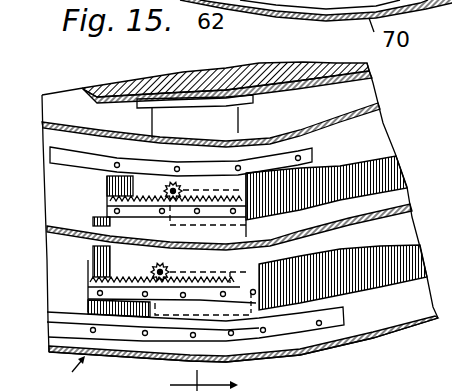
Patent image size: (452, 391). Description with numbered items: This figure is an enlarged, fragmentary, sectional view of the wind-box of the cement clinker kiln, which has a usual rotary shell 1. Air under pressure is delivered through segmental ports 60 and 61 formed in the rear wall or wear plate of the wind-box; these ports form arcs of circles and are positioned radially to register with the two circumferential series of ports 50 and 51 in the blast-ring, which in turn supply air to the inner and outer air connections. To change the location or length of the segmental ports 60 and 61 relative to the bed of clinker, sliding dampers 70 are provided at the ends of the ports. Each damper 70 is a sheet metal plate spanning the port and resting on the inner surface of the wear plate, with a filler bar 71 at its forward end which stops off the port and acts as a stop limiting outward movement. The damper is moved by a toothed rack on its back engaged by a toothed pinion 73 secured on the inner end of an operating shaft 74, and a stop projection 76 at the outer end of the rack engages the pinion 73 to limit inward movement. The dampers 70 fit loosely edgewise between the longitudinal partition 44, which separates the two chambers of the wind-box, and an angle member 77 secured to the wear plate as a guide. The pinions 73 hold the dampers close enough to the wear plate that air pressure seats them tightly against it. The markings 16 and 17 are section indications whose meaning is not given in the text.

The rotary shell 1 is at (352, 76).
The plate 16 is at (213, 124).
The section line 17 is at (68, 175).
The longitudinal partition 44 is at (411, 199).
The ports 50 is at (208, 209).
The ports 51 is at (212, 278).
The segmental port 60 is at (336, 174).
The segmental port 61 is at (389, 279).
The sliding damper 70 is at (249, 131).
The filler bar 71 is at (252, 163).
The toothed pinion 73 is at (167, 214).
The operating shaft 74 is at (176, 182).
The stop projection 76 is at (110, 196).
The angle member 77 is at (133, 165).